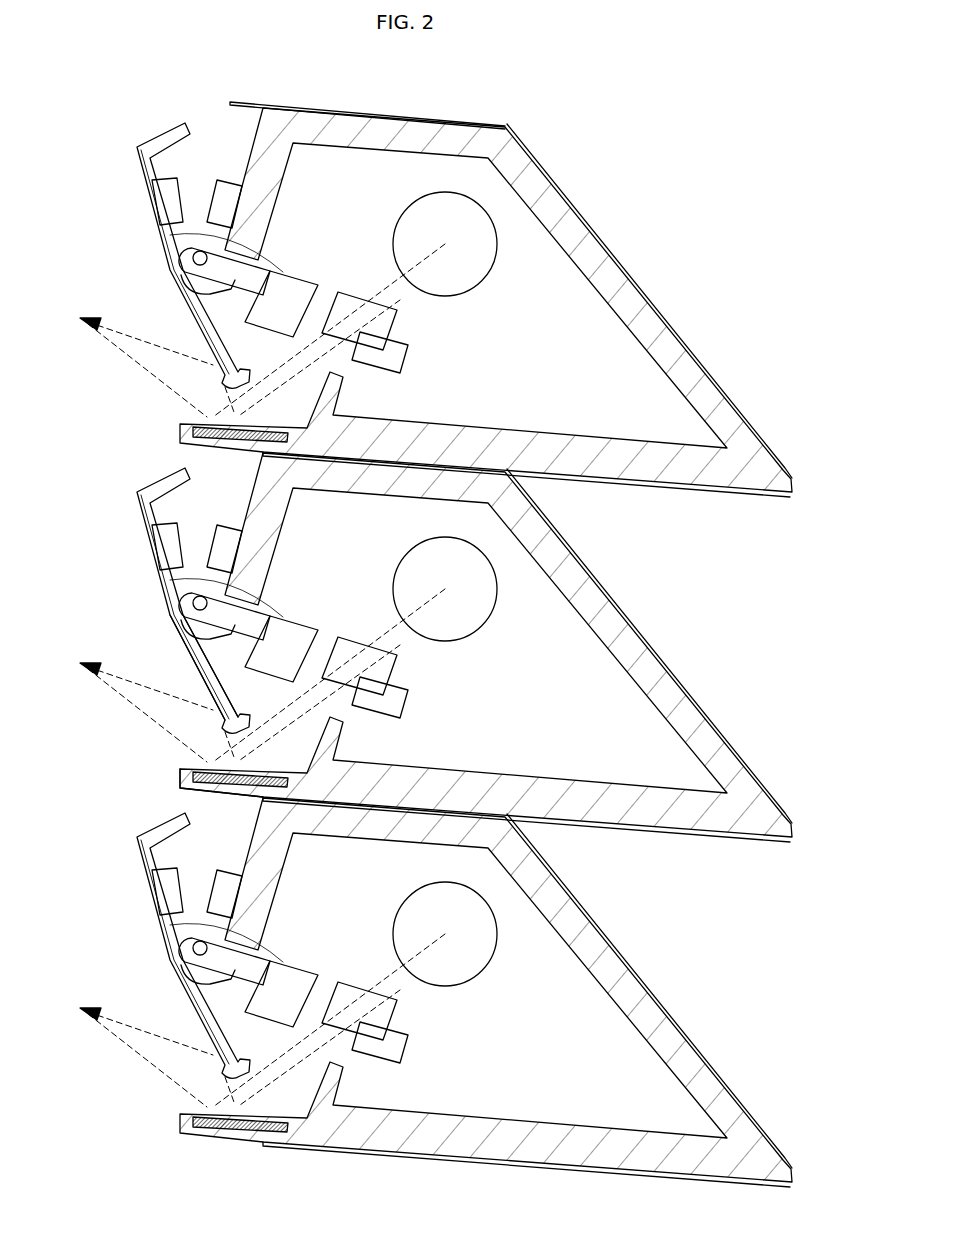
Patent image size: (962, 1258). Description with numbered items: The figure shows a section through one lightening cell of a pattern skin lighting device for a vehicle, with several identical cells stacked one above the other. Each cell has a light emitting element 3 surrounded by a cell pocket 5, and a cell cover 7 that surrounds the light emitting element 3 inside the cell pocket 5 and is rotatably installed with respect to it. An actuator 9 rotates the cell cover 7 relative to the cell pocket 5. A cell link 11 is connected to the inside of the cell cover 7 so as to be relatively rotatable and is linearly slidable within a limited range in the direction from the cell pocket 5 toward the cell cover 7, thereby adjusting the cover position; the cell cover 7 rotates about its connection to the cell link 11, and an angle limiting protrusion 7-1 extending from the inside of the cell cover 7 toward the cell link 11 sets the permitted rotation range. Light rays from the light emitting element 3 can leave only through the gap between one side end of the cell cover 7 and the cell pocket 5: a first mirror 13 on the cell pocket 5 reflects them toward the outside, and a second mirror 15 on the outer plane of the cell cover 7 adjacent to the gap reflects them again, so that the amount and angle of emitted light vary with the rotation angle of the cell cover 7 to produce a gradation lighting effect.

The light emitting element 3 is at (509, 581).
The cell pocket 5 is at (486, 647).
The cell cover 7 is at (155, 600).
The angle limiting protrusion 7-1 is at (151, 622).
The actuator 9 is at (161, 547).
The cell link 11 is at (175, 625).
The first mirror 13 is at (150, 783).
The second mirror 15 is at (125, 667).